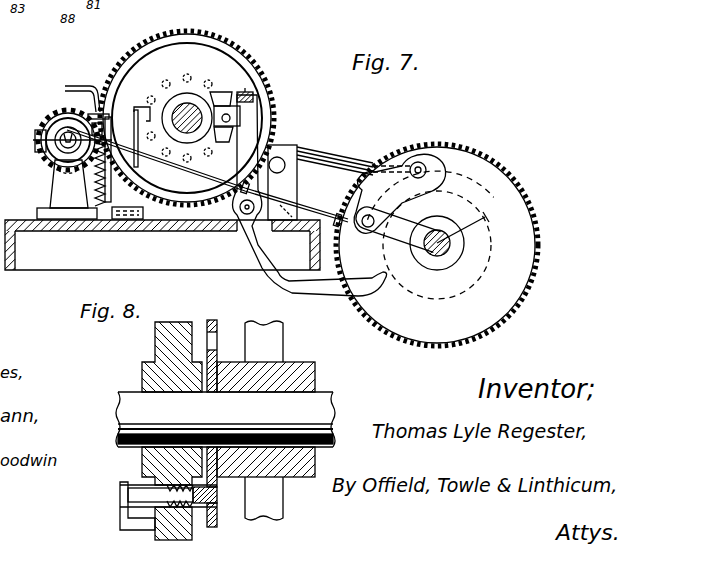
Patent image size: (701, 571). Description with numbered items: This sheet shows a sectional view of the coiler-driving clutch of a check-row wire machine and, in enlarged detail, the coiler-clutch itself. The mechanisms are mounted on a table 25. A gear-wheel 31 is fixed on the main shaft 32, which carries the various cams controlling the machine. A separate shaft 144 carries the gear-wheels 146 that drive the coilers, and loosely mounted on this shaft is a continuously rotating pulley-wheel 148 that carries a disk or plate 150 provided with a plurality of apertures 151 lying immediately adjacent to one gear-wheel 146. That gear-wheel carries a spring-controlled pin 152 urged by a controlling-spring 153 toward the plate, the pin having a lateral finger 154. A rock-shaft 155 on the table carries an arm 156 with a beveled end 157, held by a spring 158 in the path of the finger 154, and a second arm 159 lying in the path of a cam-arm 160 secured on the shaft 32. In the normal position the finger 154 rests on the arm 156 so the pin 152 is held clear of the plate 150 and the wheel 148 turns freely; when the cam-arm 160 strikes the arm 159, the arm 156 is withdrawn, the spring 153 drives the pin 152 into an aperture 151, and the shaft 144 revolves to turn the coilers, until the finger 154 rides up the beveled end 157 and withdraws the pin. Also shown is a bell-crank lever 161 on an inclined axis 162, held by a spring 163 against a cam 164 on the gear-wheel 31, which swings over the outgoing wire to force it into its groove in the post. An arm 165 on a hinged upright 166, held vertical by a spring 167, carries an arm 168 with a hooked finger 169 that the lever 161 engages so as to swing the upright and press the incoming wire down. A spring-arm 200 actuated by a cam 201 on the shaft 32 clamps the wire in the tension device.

In FIG. 7, the table 25 is at (186, 232).
In FIG. 7, the gear-wheel 31 is at (437, 245).
In FIG. 7, the shaft 32 is at (468, 231).
In FIG. 7, the shaft 144 is at (185, 104).
In FIG. 8, the shaft 144 is at (225, 419).
In FIG. 7, the gear-wheel 146 is at (243, 40).
In FIG. 8, the gear-wheel 146 is at (158, 343).
In FIG. 8, the wheel 148 is at (318, 378).
In FIG. 8, the disk or plate 150 is at (217, 360).
In FIG. 8, the apertures 151 is at (206, 334).
In FIG. 8, the spring-controlled pin 152 is at (150, 492).
In FIG. 8, the controlling-spring 153 is at (196, 522).
In FIG. 7, the lateral projection or finger 154 is at (258, 105).
In FIG. 8, the lateral projection or finger 154 is at (138, 532).
In FIG. 7, the rock-shaft 155 is at (238, 240).
In FIG. 7, the arm 156 is at (260, 122).
In FIG. 7, the beveled or inclined end 157 is at (256, 94).
In FIG. 7, the spring 158 is at (150, 232).
In FIG. 7, the second arm 159 is at (331, 292).
In FIG. 7, the cam-arm 160 is at (398, 229).
In FIG. 7, the bell-crank lever 161 is at (200, 151).
In FIG. 7, the inclined axis 162 is at (346, 172).
In FIG. 7, the spring 163 is at (282, 182).
In FIG. 7, the cam 164 is at (400, 193).
In FIG. 7, the arm 165 is at (79, 78).
In FIG. 7, the hinged upright or frame 166 is at (85, 194).
In FIG. 7, the spring 167 is at (93, 189).
In FIG. 7, the arm 168 is at (116, 149).
In FIG. 7, the terminal finger or hook 169 is at (142, 167).
In FIG. 7, the spring-arm 200 is at (412, 161).
In FIG. 7, the cam 201 is at (456, 191).